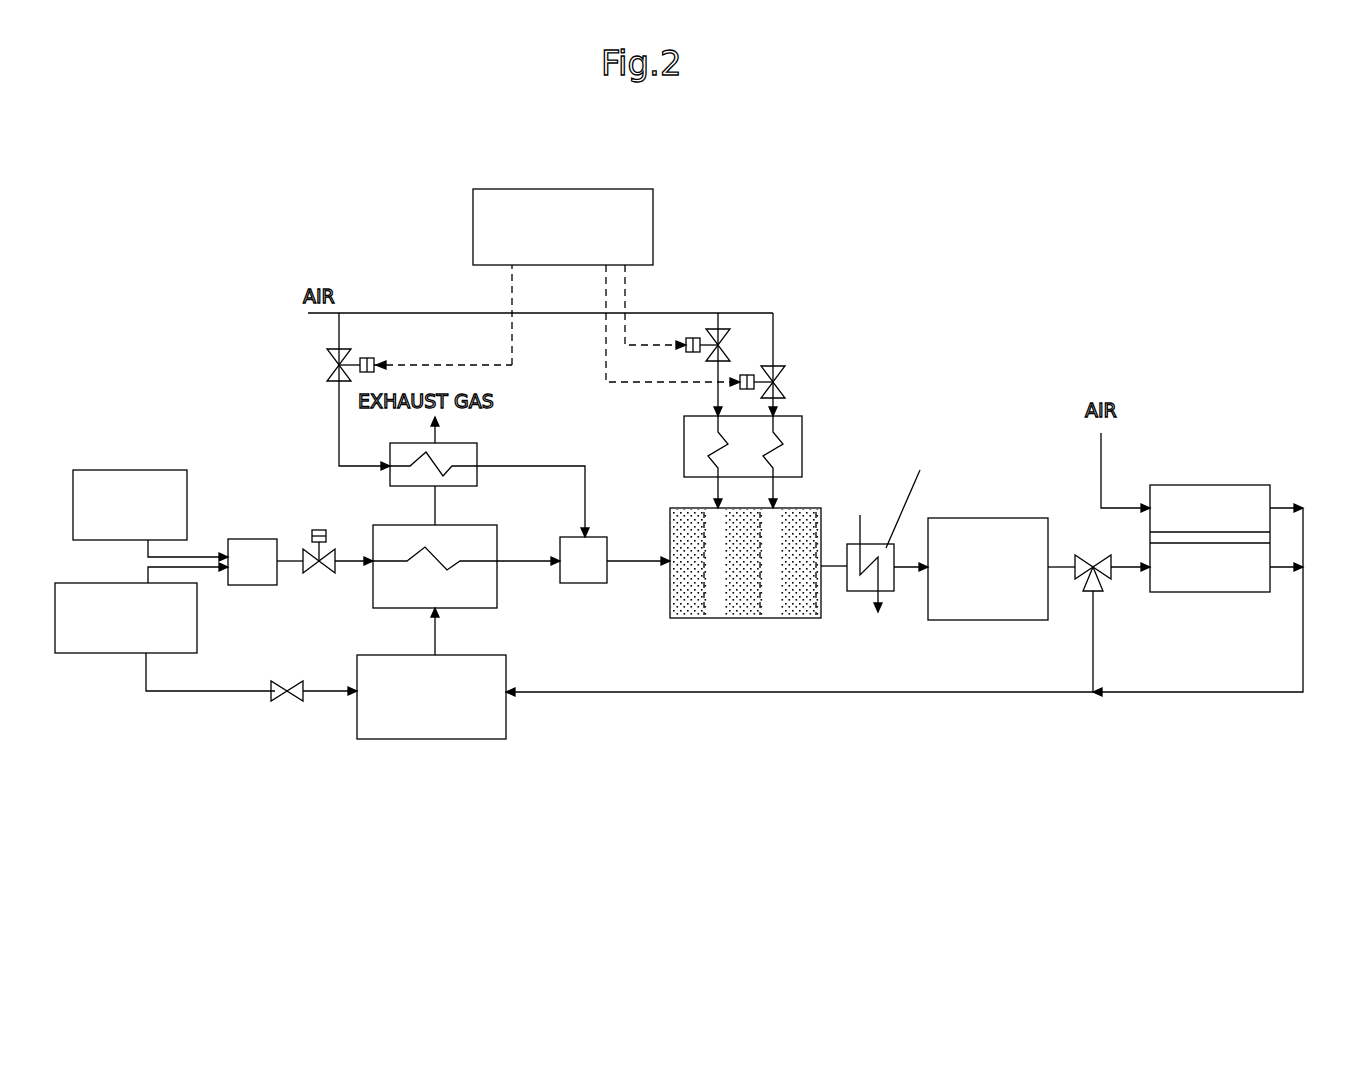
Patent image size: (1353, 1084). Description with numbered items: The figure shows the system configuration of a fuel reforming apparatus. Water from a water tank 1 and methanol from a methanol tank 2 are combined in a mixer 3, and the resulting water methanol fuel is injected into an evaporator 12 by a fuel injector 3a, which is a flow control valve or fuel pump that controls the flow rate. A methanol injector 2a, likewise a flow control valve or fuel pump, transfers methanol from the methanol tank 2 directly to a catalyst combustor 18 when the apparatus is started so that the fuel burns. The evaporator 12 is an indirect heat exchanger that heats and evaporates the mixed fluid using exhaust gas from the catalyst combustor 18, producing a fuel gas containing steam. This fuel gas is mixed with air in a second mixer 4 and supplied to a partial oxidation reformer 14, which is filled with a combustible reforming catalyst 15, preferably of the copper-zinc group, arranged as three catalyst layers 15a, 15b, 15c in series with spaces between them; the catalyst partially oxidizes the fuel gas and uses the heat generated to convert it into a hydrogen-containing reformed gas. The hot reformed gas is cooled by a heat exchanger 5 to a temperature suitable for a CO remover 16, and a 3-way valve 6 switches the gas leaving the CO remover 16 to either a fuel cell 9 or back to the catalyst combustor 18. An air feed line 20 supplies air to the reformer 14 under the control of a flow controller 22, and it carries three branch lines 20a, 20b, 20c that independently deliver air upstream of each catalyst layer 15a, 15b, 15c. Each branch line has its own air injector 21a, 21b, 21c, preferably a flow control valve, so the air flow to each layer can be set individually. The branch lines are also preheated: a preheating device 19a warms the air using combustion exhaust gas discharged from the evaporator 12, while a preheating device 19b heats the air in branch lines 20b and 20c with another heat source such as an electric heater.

The water tank 1 is at (103, 470).
The methanol tank 2 is at (120, 650).
The methanol injector 2a is at (279, 696).
The mixer 3 is at (243, 540).
The fuel injector 3a is at (310, 548).
The mixer 4 is at (598, 551).
The heat exchanger 5 is at (885, 598).
The 3-way valve 6 is at (1080, 555).
The fuel cell 9 is at (1223, 474).
The evaporator 12 is at (466, 598).
The partial oxidation reformer 14 is at (751, 637).
The combustible reforming catalyst 15 is at (686, 680).
The catalyst layer 15a is at (688, 617).
The catalyst layer 15b is at (748, 613).
The catalyst layer 15c is at (817, 615).
The CO remover 16 is at (990, 616).
The catalyst combustor 18 is at (432, 740).
The preheating device 19a is at (470, 476).
The preheating device 19b is at (797, 457).
The air feed line 20 is at (318, 360).
The branch line 20a is at (538, 462).
The branch line 20b is at (716, 401).
The branch line 20c is at (778, 409).
The air injector 21a is at (337, 383).
The air injector 21b is at (718, 330).
The air injector 21c is at (781, 372).
The flow controller 22 is at (470, 207).